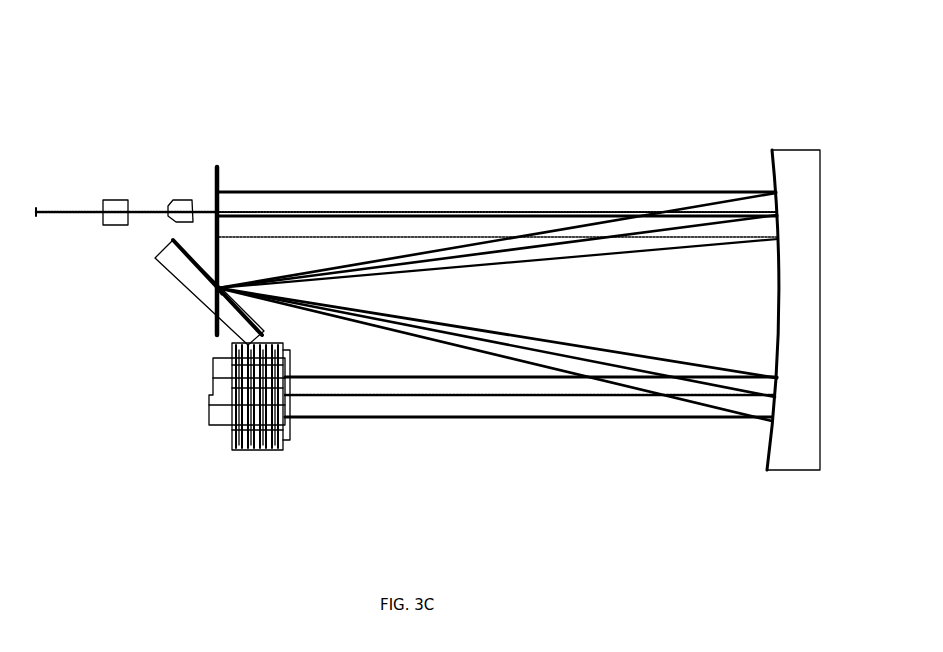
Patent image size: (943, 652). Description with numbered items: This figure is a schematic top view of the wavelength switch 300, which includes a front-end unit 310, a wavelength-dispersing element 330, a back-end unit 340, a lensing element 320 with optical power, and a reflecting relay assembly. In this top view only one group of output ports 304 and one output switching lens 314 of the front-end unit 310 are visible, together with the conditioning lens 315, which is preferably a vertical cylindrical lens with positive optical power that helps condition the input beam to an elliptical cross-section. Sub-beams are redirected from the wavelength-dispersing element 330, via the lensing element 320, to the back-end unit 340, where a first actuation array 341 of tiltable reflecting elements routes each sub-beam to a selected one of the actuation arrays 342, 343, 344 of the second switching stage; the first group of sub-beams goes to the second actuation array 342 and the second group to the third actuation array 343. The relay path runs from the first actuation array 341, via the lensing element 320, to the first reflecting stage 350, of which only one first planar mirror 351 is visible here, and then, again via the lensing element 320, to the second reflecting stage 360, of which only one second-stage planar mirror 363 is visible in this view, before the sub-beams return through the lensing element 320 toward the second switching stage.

The wavelength switch 300 is at (90, 56).
The group of output ports 304 is at (38, 209).
The front-end unit 310 is at (128, 147).
The output switching lens 314 is at (118, 200).
The conditioning lens 315 is at (178, 200).
The lensing element 320 is at (788, 470).
The wavelength-dispersing element 330 is at (166, 263).
The back-end unit 340 is at (250, 534).
The first actuation array 341 is at (270, 452).
The second actuation array 342 is at (256, 452).
The third actuation array 343 is at (245, 452).
The actuation array 344 is at (232, 452).
The first reflecting stage 350 is at (144, 315).
The first planar mirror 351 is at (216, 294).
The second reflecting stage 360 is at (230, 149).
The second-stage planar mirror 363 is at (221, 184).